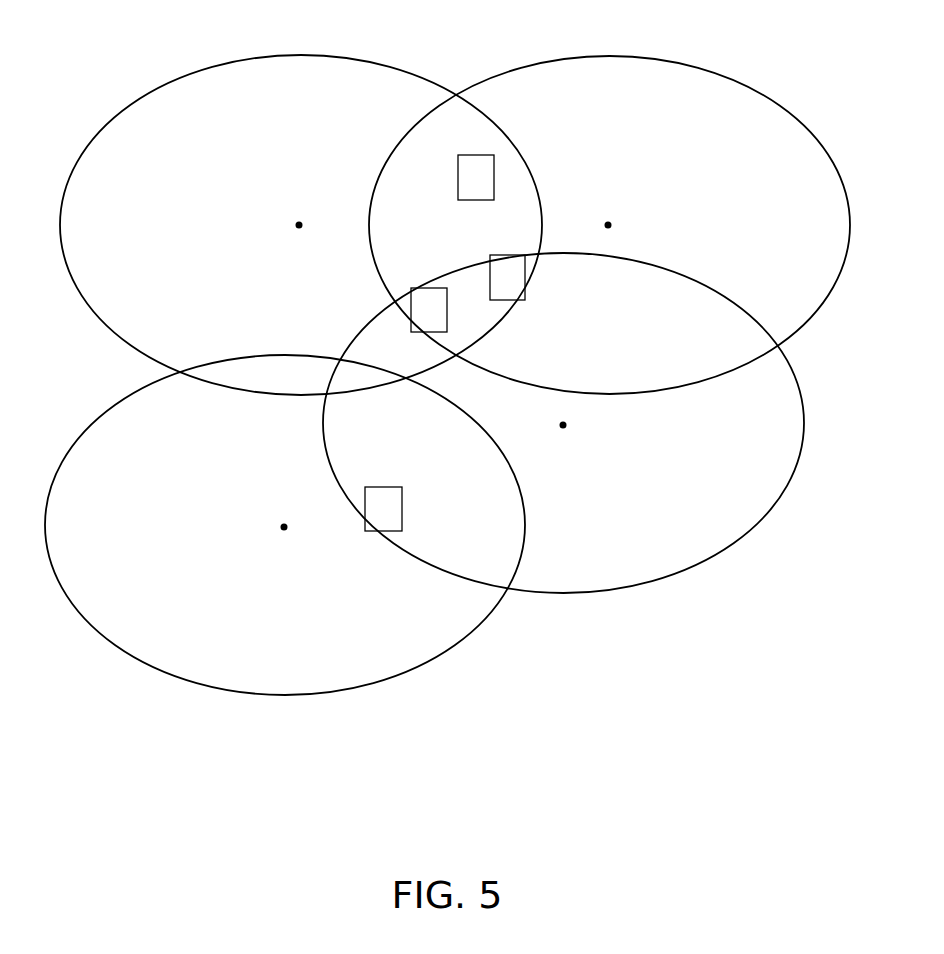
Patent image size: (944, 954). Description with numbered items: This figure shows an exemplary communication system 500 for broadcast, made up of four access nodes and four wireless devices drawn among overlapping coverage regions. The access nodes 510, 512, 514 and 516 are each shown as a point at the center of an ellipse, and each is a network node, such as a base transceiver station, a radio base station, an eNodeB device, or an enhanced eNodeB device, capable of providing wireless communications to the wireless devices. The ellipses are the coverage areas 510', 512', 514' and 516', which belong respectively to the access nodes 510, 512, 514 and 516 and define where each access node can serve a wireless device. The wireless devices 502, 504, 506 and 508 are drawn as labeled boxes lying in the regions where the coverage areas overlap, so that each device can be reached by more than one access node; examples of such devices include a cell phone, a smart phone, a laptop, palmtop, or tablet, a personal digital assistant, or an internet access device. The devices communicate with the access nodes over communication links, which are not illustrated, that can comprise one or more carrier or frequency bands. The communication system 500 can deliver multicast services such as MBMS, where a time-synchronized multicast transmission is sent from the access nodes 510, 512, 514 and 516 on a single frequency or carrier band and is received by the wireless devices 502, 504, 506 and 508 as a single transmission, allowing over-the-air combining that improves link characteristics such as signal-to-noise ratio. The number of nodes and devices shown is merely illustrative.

The communication system 500 is at (447, 424).
The wireless device 502 is at (429, 310).
The wireless device 504 is at (507, 277).
The wireless device 506 is at (476, 177).
The wireless device 508 is at (383, 509).
The access node 510 is at (276, 206).
The coverage area 510' is at (301, 207).
The access node 512 is at (631, 206).
The coverage area 512' is at (609, 207).
The access node 514 is at (259, 548).
The coverage area 514' is at (285, 540).
The access node 516 is at (591, 446).
The coverage area 516' is at (563, 429).